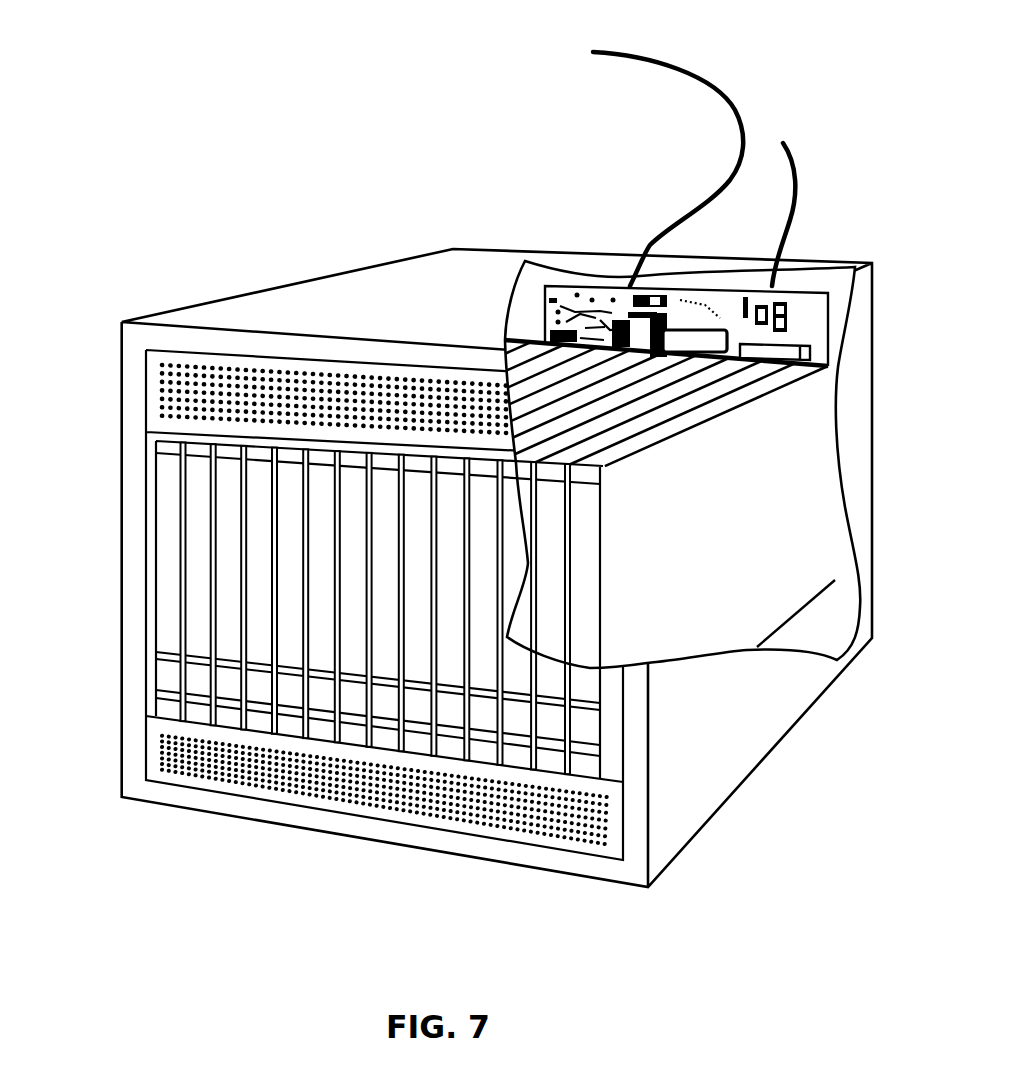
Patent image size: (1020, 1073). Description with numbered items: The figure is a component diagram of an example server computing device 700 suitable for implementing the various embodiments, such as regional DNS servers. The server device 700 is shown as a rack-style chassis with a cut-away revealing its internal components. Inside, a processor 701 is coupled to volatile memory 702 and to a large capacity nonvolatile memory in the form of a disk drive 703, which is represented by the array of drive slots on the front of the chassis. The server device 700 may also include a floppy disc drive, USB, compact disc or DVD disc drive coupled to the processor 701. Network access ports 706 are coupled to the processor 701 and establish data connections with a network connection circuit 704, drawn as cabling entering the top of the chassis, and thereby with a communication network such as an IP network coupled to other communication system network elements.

The server computing device 700 is at (352, 271).
The processor 701 is at (698, 347).
The volatile memory 702 is at (802, 352).
The disk drive 703 is at (232, 520).
The network connection circuit 704 is at (743, 127).
The network access ports 706 is at (535, 338).